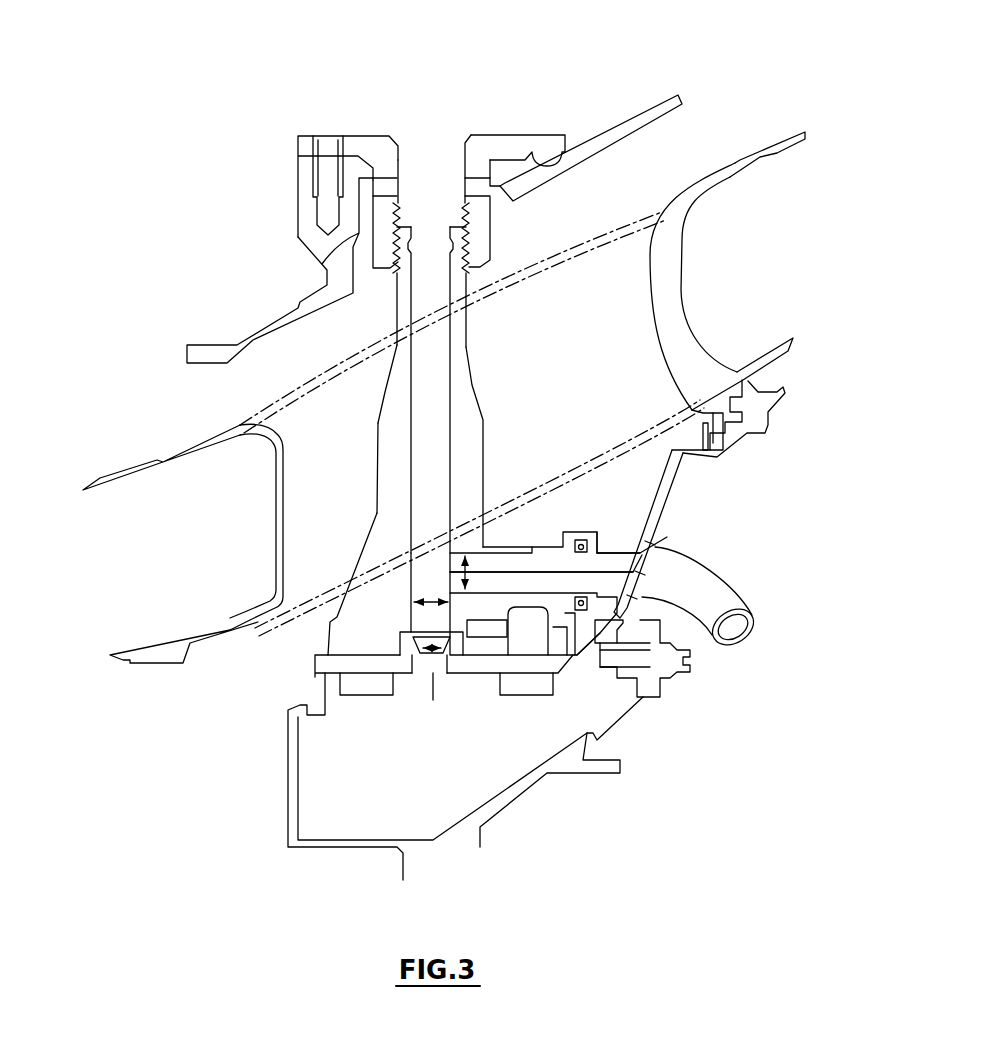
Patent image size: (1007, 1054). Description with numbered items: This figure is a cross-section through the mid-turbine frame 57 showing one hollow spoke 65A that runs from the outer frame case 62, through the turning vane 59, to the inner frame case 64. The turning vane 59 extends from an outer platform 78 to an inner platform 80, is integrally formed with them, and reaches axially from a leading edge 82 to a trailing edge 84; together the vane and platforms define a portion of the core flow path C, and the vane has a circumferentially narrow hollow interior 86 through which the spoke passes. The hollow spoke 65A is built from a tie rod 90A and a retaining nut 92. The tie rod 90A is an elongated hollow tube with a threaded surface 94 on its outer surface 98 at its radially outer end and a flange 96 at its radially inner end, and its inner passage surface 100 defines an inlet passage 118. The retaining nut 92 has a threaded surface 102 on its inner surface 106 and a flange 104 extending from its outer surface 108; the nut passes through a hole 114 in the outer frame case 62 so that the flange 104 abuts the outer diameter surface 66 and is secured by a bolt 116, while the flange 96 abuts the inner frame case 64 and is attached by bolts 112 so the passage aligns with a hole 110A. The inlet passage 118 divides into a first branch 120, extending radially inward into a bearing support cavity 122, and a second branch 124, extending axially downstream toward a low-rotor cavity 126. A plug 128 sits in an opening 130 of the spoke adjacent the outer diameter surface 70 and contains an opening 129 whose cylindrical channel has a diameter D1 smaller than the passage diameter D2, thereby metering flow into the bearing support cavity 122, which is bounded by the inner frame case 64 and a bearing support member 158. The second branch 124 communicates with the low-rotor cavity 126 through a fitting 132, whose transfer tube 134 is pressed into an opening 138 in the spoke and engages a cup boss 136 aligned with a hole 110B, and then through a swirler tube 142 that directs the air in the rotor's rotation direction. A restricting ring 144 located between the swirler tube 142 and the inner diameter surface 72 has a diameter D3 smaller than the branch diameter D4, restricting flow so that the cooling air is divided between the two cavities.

The mid-turbine frame 57 is at (198, 103).
The turning vane 59 is at (683, 252).
The outer frame case 62 is at (667, 98).
The inner frame case 64 is at (583, 666).
The hollow spoke 65A is at (490, 406).
The outer diameter surface 66 is at (627, 121).
The outer diameter surface 70 is at (315, 655).
The inner diameter surface 72 is at (570, 662).
The outer platform 78 is at (778, 156).
The inner platform 80 is at (771, 338).
The leading edge 82 is at (276, 510).
The trailing edge 84 is at (692, 314).
The hollow interior 86 is at (285, 484).
The tie rod 90A is at (476, 333).
The retaining nut 92 is at (494, 241).
The threaded surface 94 is at (398, 276).
The flange 96 is at (333, 615).
The outer surface 98 is at (382, 387).
The inner passage surface 100 is at (377, 508).
The threaded surface 102 is at (458, 212).
The flange 104 is at (547, 134).
The inner surface 106 is at (410, 148).
The outer surface 108 is at (318, 264).
The hole 110A is at (433, 675).
The hole 110B is at (622, 573).
The bolts 112 is at (360, 690).
The hole 114 is at (480, 135).
The bolt 116 is at (327, 135).
The inlet passage 118 is at (408, 447).
The first branch 120 is at (409, 611).
The bearing support cavity 122 is at (436, 729).
The second branch 124 is at (491, 557).
The low-rotor cavity 126 is at (788, 582).
The plug 128 is at (400, 648).
The opening 129 is at (435, 631).
The opening 130 is at (480, 652).
The fitting 132 is at (597, 527).
The transfer tube 134 is at (552, 516).
The cup boss 136 is at (631, 545).
The opening 138 is at (532, 565).
The swirler tube 142 is at (692, 560).
The restricting ring 144 is at (661, 543).
The bearing support member 158 is at (500, 792).
The core flow path C is at (128, 571).
The diameter D1 is at (433, 656).
The diameter D2 is at (430, 600).
The diameter D3 is at (643, 580).
The diameter D4 is at (463, 578).